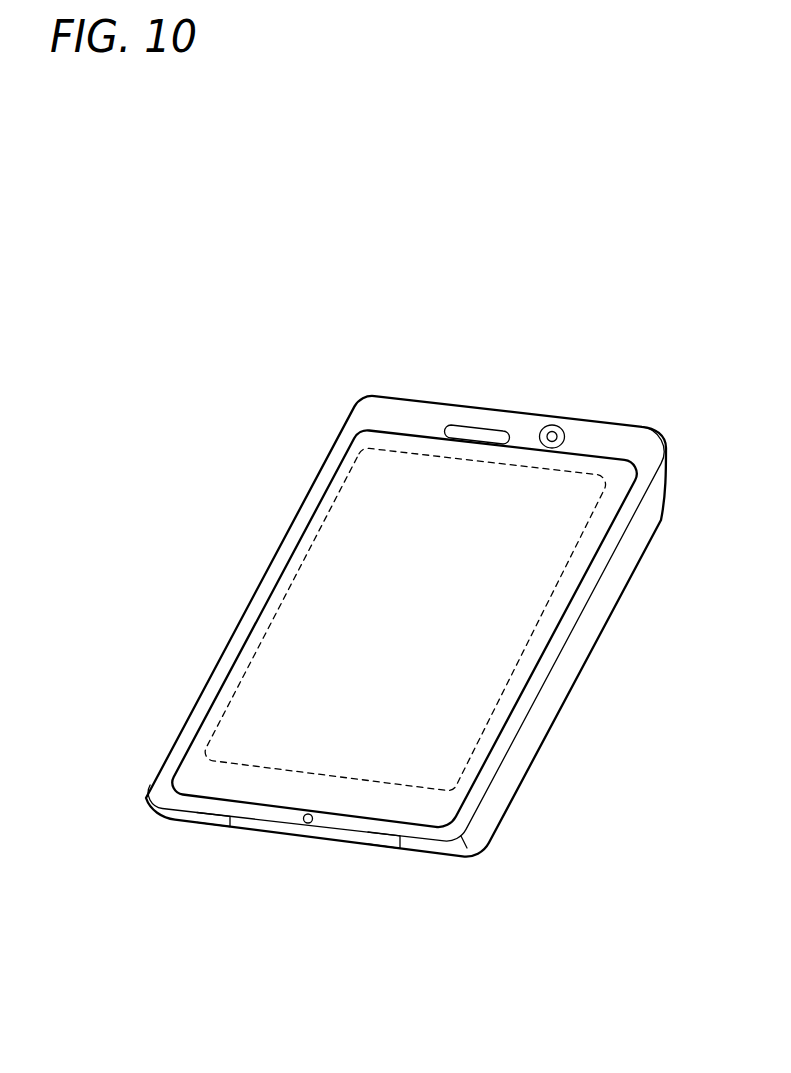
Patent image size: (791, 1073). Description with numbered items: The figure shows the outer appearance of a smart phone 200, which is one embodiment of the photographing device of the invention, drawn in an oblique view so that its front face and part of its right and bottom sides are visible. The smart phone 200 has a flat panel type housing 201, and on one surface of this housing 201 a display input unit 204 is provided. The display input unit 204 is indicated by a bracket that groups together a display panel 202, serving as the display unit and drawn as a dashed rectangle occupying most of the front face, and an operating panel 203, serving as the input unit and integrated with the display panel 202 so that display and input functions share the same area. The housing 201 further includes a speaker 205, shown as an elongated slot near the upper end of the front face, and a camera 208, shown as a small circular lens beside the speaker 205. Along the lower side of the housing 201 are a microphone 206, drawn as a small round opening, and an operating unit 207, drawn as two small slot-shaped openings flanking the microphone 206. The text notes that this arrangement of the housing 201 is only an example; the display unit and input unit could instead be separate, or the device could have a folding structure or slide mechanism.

The smart phone 200 is at (241, 472).
The housing 201 is at (362, 403).
The display panel 202 is at (580, 463).
The operating panel 203 is at (641, 432).
The display input unit 204 is at (700, 356).
The speaker 205 is at (473, 427).
The microphone 206 is at (305, 824).
The operating unit 207 is at (212, 828).
The camera 208 is at (548, 425).